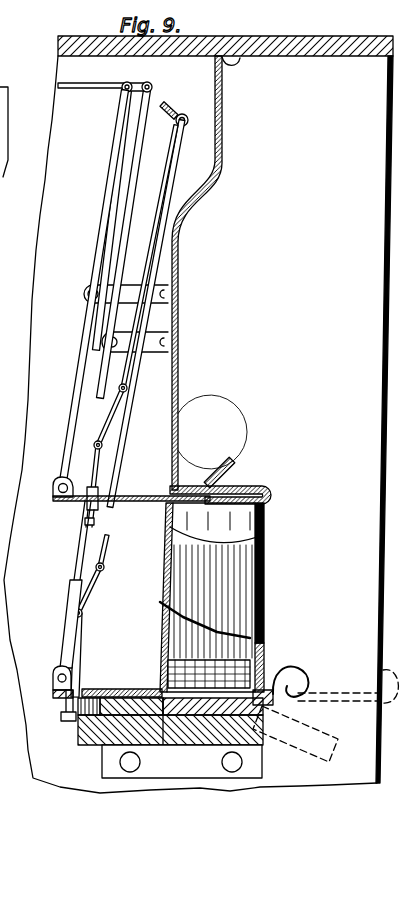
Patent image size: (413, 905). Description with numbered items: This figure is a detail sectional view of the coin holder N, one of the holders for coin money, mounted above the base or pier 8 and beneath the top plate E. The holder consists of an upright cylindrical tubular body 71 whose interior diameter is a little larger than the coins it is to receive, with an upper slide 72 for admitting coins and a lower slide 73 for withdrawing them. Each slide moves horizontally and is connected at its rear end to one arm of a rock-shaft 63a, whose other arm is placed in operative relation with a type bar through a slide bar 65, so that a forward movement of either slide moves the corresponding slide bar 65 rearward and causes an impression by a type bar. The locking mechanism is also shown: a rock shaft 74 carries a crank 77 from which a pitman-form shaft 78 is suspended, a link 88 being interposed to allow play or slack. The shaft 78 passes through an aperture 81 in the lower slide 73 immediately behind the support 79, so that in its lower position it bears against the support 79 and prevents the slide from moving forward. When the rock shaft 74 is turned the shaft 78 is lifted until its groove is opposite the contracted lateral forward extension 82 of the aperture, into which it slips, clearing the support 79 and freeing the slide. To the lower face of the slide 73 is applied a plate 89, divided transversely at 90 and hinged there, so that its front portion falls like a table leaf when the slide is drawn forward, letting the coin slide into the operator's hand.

The top plate E is at (283, 40).
The slide bar 65 is at (141, 82).
The rock shaft 74 is at (168, 105).
The crank 77 is at (188, 116).
The pitman-form shaft 78 is at (181, 151).
The link 88 is at (120, 418).
The rock-shaft 63a is at (34, 630).
The upper slide 72 is at (272, 497).
The cylindrical tubular body 71 is at (266, 571).
The coin holder N is at (223, 600).
The lower slide 73 is at (277, 673).
The aperture 81 is at (84, 689).
The contracted lateral forward extension 82 is at (80, 694).
The plate 89 is at (270, 700).
The base or pier 8 is at (62, 702).
The support 79 is at (87, 748).
The transverse division 90 is at (165, 747).